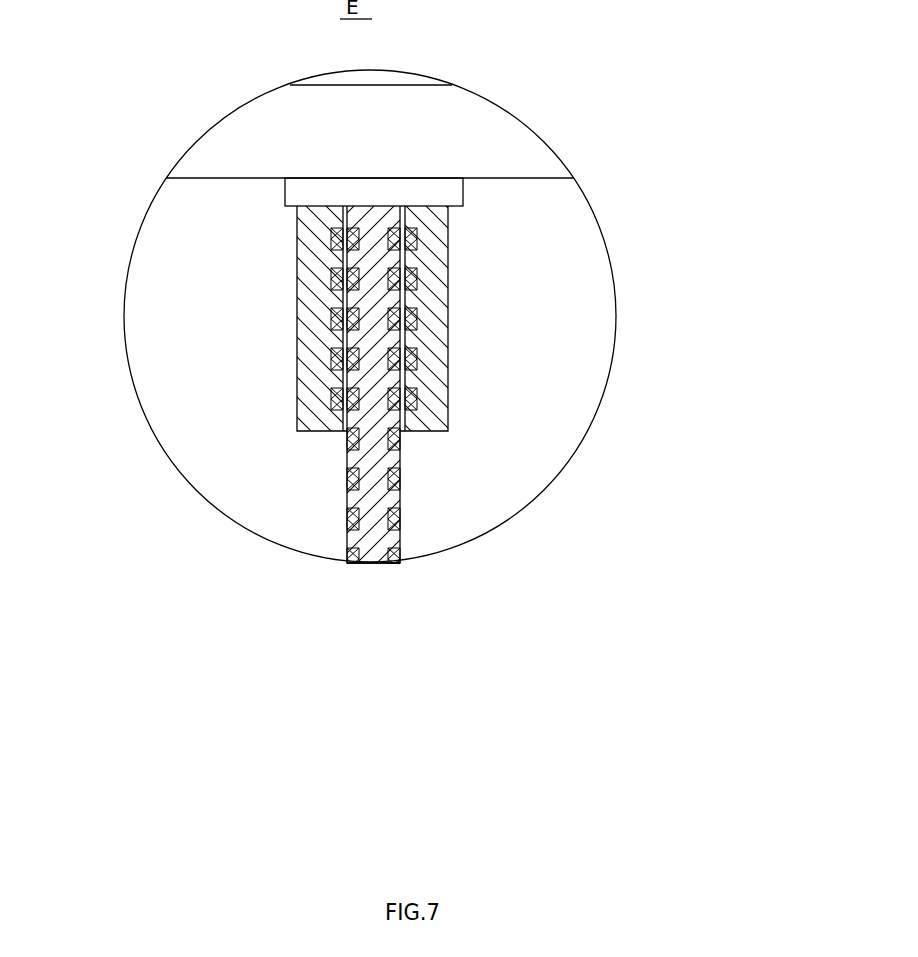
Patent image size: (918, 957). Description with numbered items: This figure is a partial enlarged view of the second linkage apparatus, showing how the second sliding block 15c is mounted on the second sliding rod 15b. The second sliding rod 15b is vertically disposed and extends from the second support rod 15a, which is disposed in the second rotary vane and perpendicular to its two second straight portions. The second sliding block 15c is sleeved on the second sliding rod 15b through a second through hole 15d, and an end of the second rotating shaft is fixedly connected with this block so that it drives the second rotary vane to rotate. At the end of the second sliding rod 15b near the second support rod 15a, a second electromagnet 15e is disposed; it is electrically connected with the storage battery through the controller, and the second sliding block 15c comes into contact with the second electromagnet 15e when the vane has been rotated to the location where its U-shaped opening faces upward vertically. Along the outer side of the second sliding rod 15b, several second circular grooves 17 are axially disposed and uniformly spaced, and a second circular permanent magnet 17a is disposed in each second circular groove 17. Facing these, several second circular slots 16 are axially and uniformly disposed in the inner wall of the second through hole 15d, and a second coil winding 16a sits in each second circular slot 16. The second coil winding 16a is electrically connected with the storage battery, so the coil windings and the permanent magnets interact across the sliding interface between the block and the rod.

The second support rod 15a is at (475, 137).
The second electromagnet 15e is at (317, 187).
The second sliding block 15c is at (310, 215).
The second circular groove 17 is at (413, 240).
The second circular permanent magnet 17a is at (445, 367).
The second coil winding 16a is at (333, 357).
The second circular slot 16 is at (298, 412).
The second through hole 15d is at (403, 430).
The second sliding rod 15b is at (373, 547).